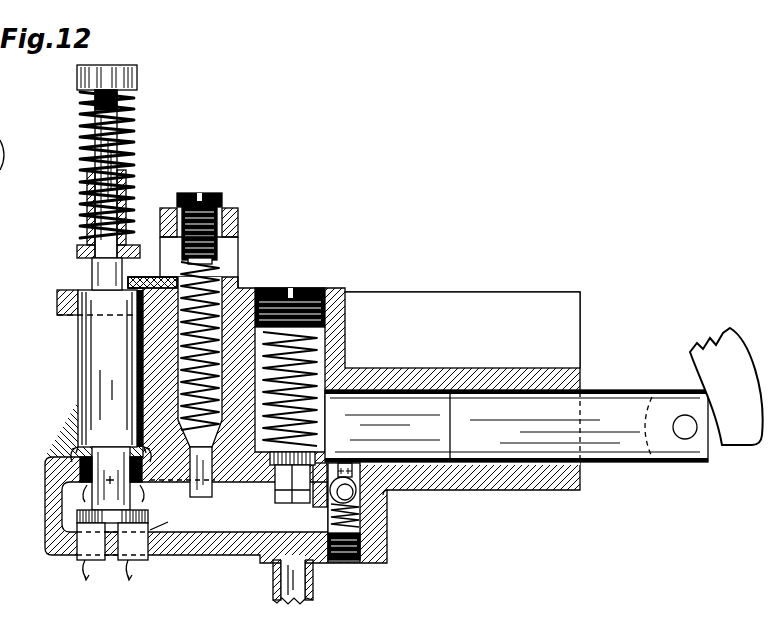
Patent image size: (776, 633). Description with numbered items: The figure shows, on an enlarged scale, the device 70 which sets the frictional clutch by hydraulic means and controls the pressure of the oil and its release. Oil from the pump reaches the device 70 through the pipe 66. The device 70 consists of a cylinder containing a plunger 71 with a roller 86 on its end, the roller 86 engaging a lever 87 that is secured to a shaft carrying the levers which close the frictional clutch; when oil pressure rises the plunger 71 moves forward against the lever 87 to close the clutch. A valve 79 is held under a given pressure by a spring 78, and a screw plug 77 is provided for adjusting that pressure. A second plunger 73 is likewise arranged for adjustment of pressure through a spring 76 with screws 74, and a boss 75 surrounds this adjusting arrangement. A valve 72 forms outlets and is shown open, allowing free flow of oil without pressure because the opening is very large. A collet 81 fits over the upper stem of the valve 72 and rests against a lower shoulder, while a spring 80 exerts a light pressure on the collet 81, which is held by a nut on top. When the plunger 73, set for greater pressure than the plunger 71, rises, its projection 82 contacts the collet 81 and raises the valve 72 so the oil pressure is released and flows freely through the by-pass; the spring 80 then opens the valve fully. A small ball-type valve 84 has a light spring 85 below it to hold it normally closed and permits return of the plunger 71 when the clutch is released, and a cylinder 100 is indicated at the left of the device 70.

The cylinder 100 is at (0, 127).
The spring 80 is at (133, 131).
The collet 81 is at (77, 254).
The projection 82 is at (128, 282).
The valve 72 is at (112, 435).
The screws 74 is at (222, 200).
The boss 75 is at (238, 222).
The spring 76 is at (222, 272).
The screw plug 77 is at (283, 288).
The spring 78 is at (320, 345).
The device 70 is at (312, 420).
The plunger 71 is at (516, 426).
The roller 86 is at (710, 455).
The lever 87 is at (726, 386).
The plunger 73 is at (212, 496).
The valve 79 is at (283, 500).
The valve 84 is at (360, 495).
The spring 85 is at (360, 525).
The pipe 66 is at (313, 585).